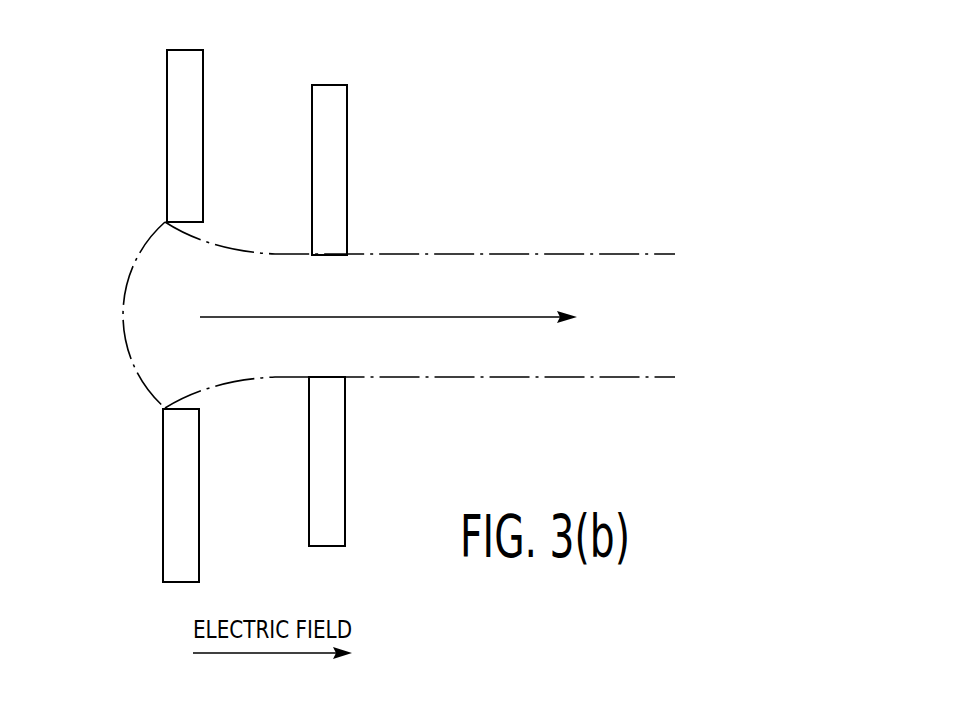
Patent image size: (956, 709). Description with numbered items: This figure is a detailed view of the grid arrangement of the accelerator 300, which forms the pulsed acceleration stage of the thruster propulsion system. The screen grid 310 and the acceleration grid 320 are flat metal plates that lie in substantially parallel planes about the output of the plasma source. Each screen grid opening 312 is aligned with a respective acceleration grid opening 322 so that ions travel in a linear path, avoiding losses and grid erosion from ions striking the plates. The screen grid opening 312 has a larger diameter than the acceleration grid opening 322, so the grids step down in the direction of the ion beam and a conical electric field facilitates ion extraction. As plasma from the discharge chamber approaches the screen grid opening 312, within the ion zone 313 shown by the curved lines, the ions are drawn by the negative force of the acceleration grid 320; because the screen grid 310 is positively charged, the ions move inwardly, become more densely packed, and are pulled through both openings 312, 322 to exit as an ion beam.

The accelerator 300 is at (537, 133).
The screen grid 310 is at (167, 77).
The screen grid opening 312 is at (152, 214).
The ion zone 313 is at (150, 407).
The acceleration grid 320 is at (312, 111).
The acceleration grid opening 322 is at (334, 294).